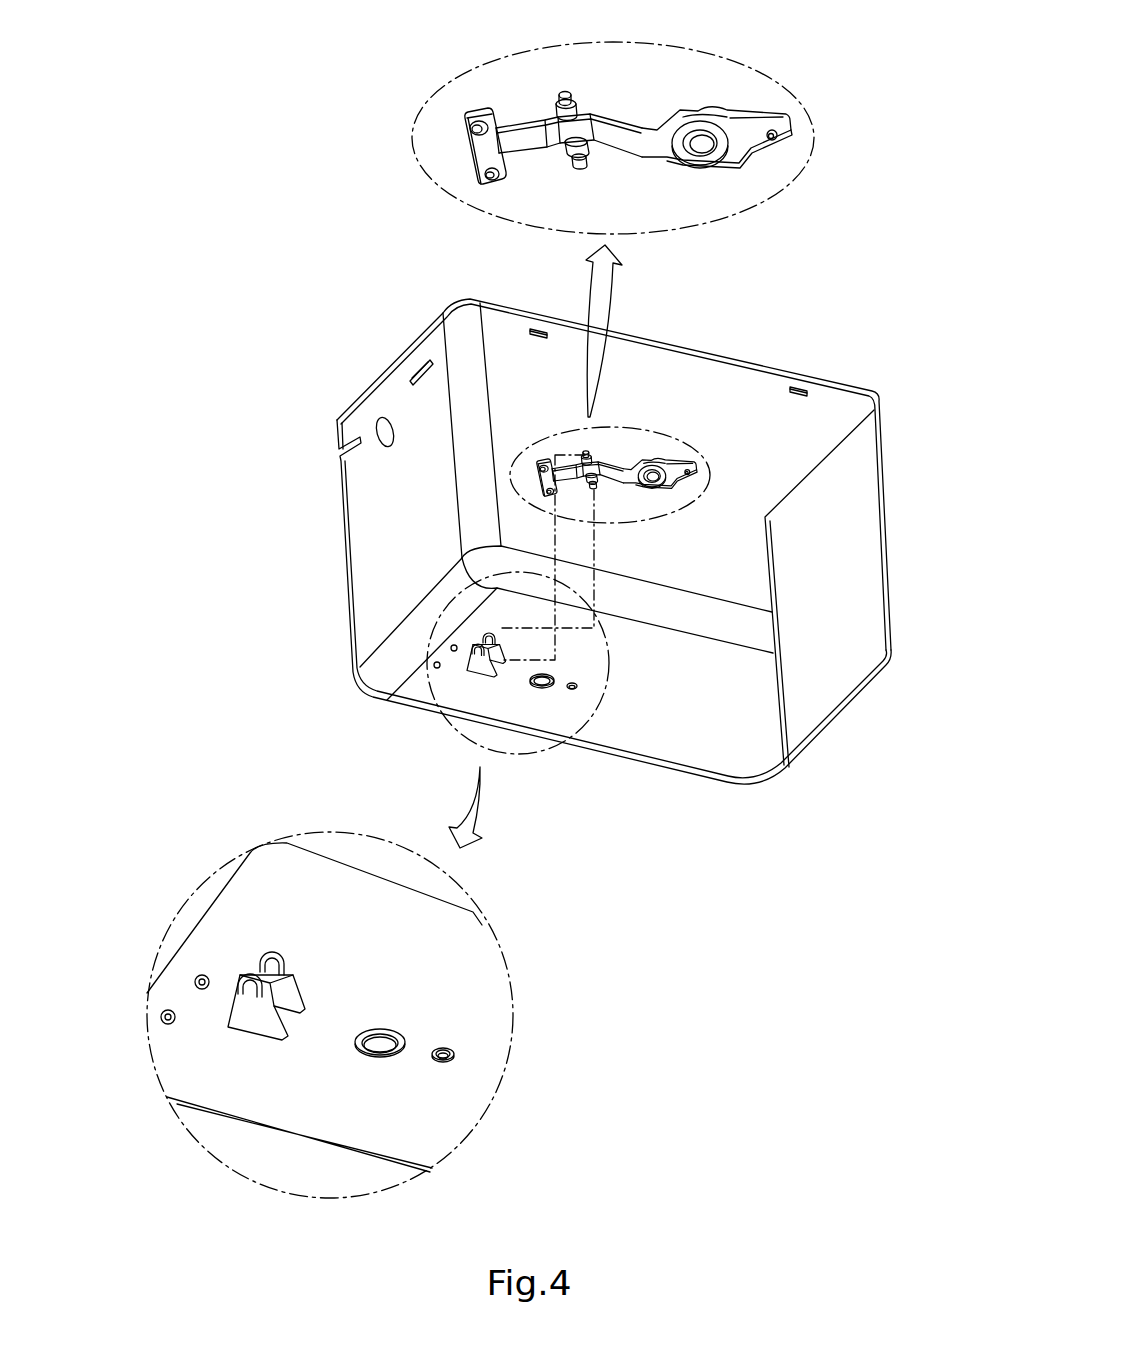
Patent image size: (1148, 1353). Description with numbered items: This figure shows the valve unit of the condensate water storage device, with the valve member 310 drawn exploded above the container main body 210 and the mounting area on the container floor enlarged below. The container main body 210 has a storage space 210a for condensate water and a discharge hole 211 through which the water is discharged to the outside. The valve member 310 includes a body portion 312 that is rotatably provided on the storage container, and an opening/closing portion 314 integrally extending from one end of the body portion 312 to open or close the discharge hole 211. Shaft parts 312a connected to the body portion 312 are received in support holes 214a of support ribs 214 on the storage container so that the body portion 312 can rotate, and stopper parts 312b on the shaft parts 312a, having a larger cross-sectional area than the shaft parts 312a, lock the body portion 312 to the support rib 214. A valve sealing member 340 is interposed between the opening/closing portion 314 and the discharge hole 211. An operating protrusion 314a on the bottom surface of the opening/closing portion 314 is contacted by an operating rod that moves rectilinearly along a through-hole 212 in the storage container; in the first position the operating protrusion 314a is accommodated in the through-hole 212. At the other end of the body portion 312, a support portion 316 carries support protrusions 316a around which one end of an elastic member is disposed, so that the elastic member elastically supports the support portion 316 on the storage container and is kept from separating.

The container main body 210 is at (818, 652).
The storage space 210a is at (738, 567).
The discharge hole 211 is at (540, 682).
The through-hole 212 is at (457, 1054).
The support rib 214 is at (253, 1018).
The support hole 214a is at (247, 990).
The valve member 310 is at (513, 112).
The body portion 312 is at (592, 128).
The shaft part 312a is at (563, 91).
The stopper part 312b is at (580, 163).
The opening/closing portion 314 is at (712, 119).
The operating protrusion 314a is at (773, 142).
The support portion 316 is at (480, 150).
The support protrusion 316a is at (490, 177).
The valve sealing member 340 is at (700, 148).